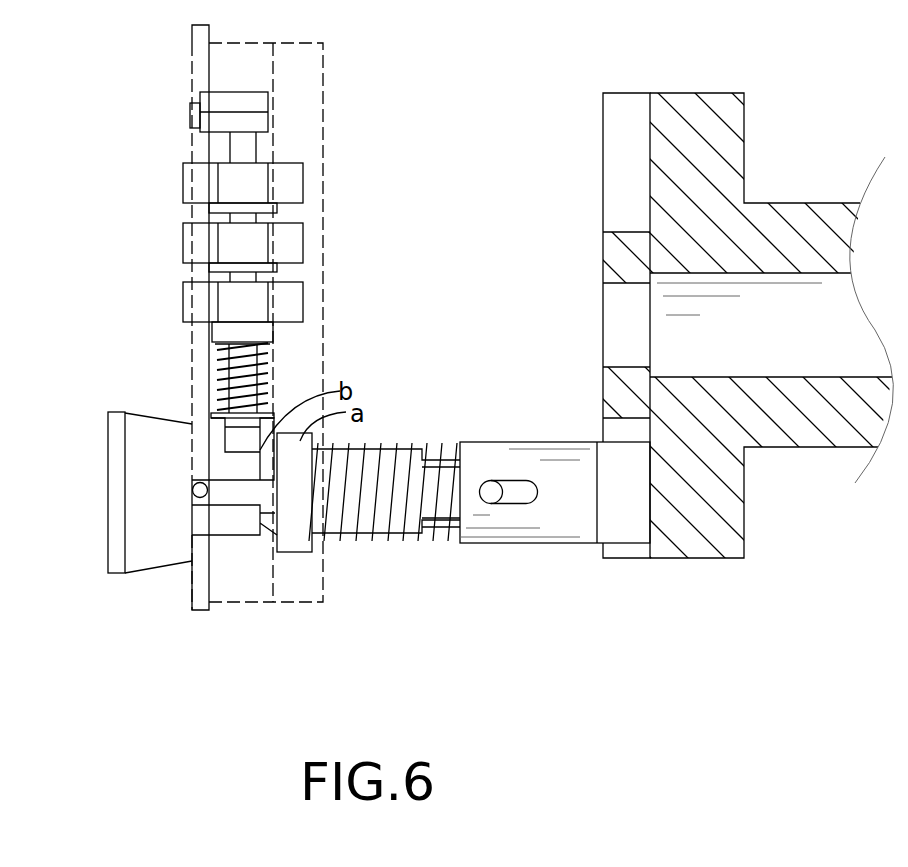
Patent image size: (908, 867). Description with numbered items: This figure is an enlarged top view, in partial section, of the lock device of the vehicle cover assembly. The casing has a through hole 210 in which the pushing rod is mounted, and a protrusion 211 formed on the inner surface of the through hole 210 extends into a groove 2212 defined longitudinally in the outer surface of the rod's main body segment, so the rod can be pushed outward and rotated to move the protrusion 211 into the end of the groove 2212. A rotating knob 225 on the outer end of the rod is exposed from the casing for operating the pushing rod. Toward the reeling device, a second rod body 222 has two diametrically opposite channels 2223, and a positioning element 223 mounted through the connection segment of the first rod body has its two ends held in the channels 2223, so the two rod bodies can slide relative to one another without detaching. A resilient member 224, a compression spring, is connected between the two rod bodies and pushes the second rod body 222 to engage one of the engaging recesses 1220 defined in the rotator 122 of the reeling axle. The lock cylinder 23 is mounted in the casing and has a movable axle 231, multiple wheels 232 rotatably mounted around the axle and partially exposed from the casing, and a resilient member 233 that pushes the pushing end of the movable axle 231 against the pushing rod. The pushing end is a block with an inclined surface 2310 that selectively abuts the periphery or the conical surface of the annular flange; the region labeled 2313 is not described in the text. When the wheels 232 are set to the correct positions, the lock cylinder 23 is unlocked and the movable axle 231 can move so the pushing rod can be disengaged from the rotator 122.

The rotator 122 is at (736, 150).
The engaging recess 1220 is at (625, 102).
The lock cylinder 23 is at (317, 295).
The wheels 232 is at (185, 182).
The movable axle 231 is at (237, 218).
The resilient member 233 is at (263, 382).
The inclined surface 2310 is at (225, 460).
The protrusion 211 is at (193, 487).
The through hole 210 is at (195, 533).
The rotating knob 225 is at (176, 563).
The groove 2212 is at (239, 500).
The stop plate 2313 is at (297, 543).
The resilient member 224 is at (430, 530).
The second rod body 222 is at (547, 537).
The channel 2223 is at (510, 503).
The positioning element 223 is at (490, 488).